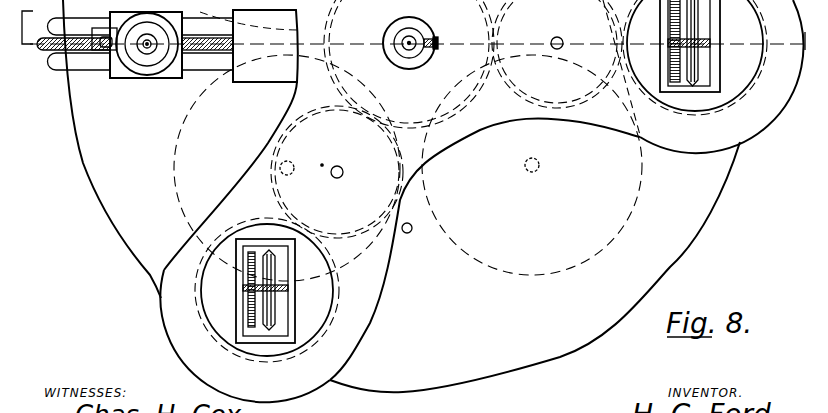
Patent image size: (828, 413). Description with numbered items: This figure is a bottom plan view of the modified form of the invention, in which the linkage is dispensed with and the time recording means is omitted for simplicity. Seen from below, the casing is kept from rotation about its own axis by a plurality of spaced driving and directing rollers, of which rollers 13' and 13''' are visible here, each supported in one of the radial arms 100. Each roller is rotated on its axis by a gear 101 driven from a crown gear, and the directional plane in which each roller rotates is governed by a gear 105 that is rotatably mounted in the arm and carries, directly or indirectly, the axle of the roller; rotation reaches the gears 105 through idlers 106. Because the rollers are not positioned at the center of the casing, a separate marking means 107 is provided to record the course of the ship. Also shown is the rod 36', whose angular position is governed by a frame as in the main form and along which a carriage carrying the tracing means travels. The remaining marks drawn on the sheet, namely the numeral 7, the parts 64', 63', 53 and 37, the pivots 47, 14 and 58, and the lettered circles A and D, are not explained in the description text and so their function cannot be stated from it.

The bracket indicating section 7 is at (27, 27).
The rod 36' is at (135, 35).
The sleeve 64' is at (98, 58).
The bearing block hub 63' is at (146, 45).
The threaded rod 53 is at (196, 42).
The bearing box 37 is at (265, 46).
The marking means 107 is at (406, 47).
The idlers 106 is at (446, 119).
The center pivot 47 is at (289, 176).
The circle A is at (287, 168).
The pivot 14 is at (544, 169).
The circle D is at (643, 176).
The pin 58 is at (416, 235).
The radial arms 100 is at (481, 181).
The gears 105 is at (257, 268).
The gears 101 is at (250, 312).
The driving and directing roller 13''' is at (294, 290).
The driving and directing roller 13' is at (716, 43).